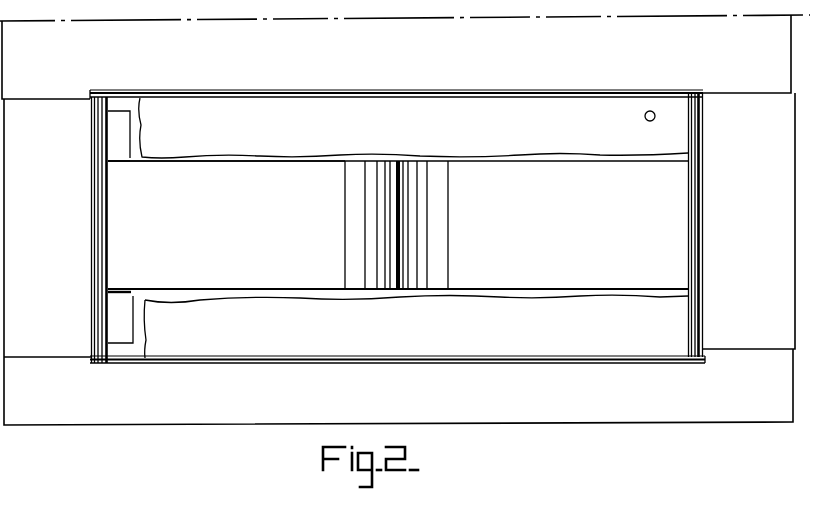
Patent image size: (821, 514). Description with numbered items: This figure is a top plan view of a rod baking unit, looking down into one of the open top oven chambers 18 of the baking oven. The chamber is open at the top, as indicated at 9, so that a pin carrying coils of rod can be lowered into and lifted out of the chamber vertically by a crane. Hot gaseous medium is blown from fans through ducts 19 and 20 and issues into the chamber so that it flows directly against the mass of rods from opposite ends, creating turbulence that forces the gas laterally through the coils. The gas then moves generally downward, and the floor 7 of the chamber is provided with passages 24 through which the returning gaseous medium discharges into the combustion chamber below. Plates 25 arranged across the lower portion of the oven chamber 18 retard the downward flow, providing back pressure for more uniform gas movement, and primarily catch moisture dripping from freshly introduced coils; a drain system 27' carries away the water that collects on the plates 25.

The floor 7 is at (181, 298).
The open top 9 is at (262, 360).
The oven chamber 18 is at (668, 209).
The duct 19 is at (281, 284).
The duct 20 is at (549, 279).
The passage 24 is at (128, 162).
The plate 25 is at (500, 146).
The drain system 27' is at (630, 131).